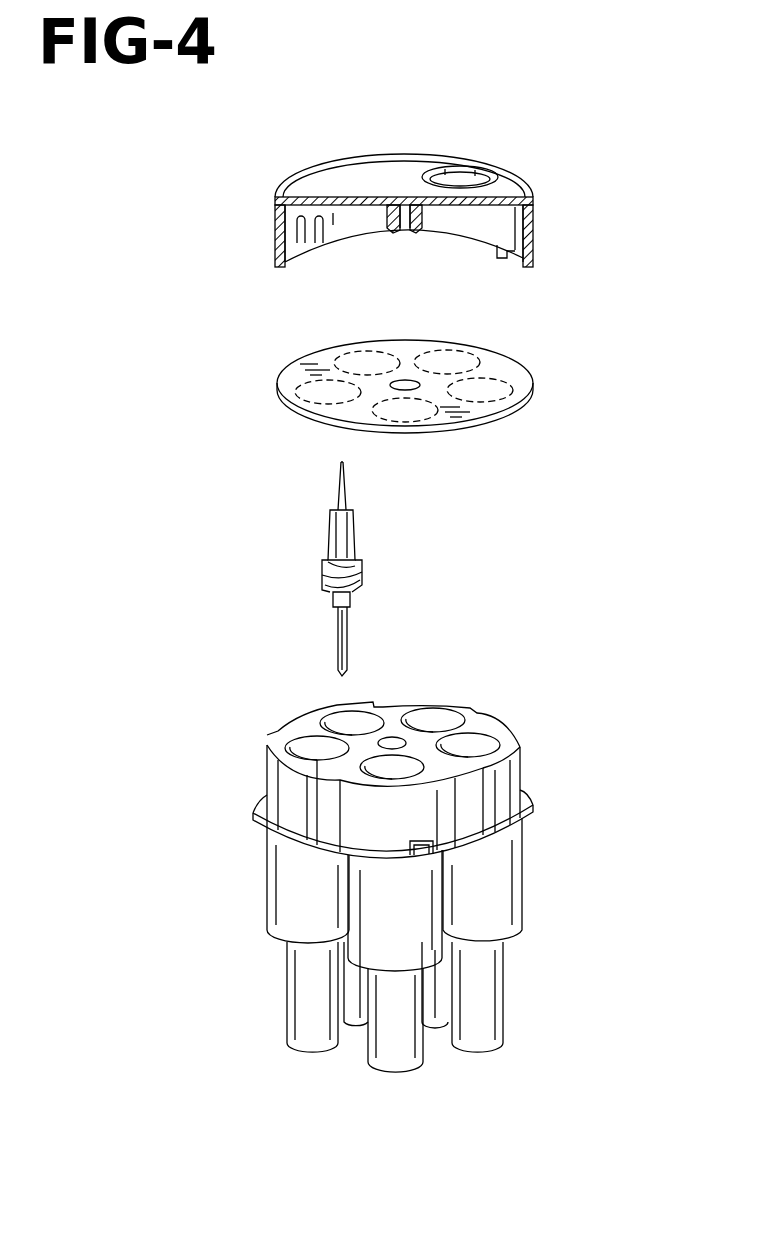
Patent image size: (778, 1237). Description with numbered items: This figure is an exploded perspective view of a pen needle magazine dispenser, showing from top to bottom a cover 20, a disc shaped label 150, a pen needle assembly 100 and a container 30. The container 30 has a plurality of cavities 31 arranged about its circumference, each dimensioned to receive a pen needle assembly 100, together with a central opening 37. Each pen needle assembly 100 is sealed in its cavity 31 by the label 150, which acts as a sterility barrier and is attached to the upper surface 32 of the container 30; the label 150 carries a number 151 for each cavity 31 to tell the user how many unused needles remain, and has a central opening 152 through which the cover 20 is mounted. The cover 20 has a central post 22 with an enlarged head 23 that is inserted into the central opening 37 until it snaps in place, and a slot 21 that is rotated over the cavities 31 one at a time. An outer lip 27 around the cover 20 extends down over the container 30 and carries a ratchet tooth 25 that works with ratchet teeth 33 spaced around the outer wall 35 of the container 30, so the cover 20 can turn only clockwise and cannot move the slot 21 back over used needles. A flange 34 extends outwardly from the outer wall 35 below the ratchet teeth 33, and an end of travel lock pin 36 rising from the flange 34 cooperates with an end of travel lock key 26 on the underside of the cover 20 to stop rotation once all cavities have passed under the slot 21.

The cover 20 is at (418, 226).
The slot 21 is at (467, 181).
The central post 22 is at (423, 218).
The enlarged head 23 is at (392, 222).
The ratchet tooth 25 is at (307, 243).
The end of travel lock key 26 is at (503, 258).
The outer lip 27 is at (534, 236).
The label 150 is at (456, 395).
The number 151 is at (492, 390).
The central opening 152 is at (398, 387).
The pen needle assembly 100 is at (380, 540).
The container 30 is at (412, 854).
The cavity 31 is at (443, 718).
The upper surface 32 is at (303, 733).
The ratchet teeth 33 is at (325, 790).
The flange 34 is at (523, 834).
The outer wall 35 is at (513, 780).
The end of travel lock pin 36 is at (423, 853).
The central opening 37 is at (392, 742).